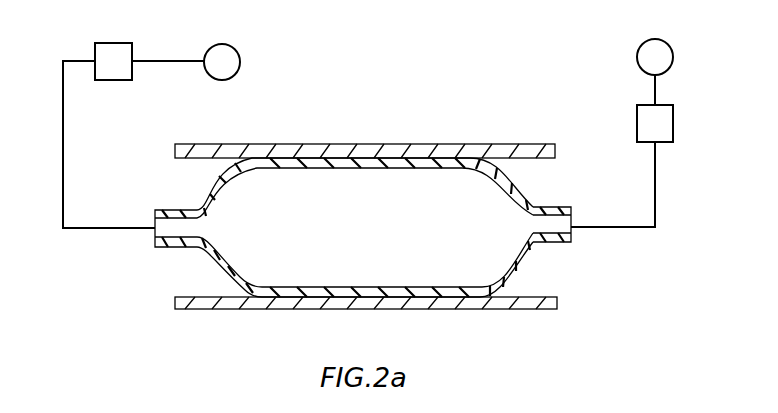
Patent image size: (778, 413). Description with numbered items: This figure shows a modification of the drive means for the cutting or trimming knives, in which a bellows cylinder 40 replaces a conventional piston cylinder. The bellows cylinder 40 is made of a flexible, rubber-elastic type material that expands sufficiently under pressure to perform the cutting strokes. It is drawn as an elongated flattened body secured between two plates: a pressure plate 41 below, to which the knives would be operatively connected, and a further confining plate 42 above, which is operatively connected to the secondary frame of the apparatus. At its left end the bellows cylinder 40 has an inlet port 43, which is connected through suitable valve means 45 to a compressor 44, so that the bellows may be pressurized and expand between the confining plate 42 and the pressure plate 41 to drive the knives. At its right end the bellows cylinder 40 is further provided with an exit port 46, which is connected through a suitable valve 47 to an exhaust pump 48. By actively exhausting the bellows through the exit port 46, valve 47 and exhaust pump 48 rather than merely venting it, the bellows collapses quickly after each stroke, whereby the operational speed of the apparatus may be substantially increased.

The bellows cylinder 40 is at (533, 263).
The pressure plate 41 is at (463, 309).
The confining plate 42 is at (314, 144).
The inlet port 43 is at (157, 248).
The compressor 44 is at (235, 48).
The valve means 45 is at (126, 43).
The exit port 46 is at (573, 240).
The valve 47 is at (673, 125).
The exhaust pump 48 is at (672, 64).